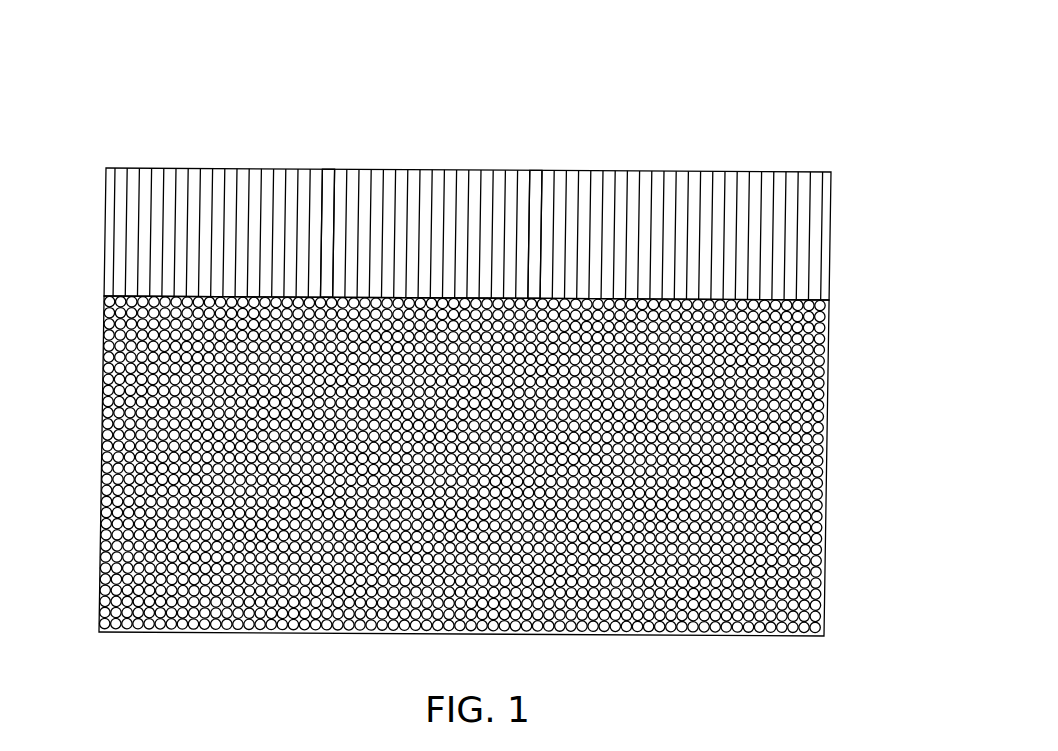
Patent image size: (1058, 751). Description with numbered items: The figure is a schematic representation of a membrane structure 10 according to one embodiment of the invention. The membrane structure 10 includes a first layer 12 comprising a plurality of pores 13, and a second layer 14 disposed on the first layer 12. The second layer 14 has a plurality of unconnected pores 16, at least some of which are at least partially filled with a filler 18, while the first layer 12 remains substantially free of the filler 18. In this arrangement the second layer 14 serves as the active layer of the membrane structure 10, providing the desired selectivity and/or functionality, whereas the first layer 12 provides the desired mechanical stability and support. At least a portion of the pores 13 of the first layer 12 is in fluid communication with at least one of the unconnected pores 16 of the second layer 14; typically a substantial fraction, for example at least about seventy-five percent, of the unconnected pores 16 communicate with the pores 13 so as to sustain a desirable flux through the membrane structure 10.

The membrane structure 10 is at (710, 66).
The first layer 12 is at (468, 466).
The pores 13 is at (150, 466).
The second layer 14 is at (504, 208).
The unconnected pores 16 is at (326, 178).
The filler 18 is at (535, 178).